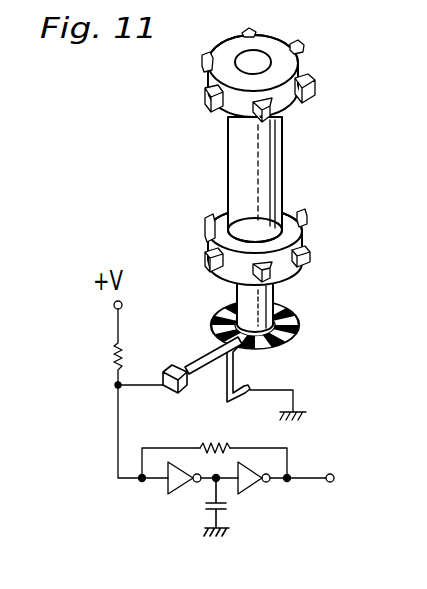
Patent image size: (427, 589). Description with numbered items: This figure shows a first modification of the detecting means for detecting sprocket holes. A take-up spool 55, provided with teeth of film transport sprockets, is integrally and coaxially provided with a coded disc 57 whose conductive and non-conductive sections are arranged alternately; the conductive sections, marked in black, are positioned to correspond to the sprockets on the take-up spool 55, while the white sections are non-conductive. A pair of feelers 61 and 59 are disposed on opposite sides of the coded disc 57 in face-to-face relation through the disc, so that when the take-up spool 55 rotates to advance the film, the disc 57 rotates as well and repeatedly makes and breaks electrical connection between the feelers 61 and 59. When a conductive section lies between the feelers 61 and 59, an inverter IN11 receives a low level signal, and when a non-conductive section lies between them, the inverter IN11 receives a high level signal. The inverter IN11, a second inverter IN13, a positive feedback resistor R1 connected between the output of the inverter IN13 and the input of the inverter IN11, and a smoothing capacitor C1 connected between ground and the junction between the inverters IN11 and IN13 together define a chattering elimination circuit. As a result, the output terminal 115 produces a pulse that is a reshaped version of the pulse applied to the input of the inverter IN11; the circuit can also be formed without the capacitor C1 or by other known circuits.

The take-up spool 55 is at (276, 153).
The coded disc 57 is at (292, 317).
The feeler 59 is at (235, 368).
The feeler 61 is at (203, 358).
The positive feedback resistor R1 is at (213, 447).
The smoothing capacitor C1 is at (229, 505).
The inverter IN11 is at (177, 490).
The inverter IN13 is at (248, 486).
The output terminal 115 is at (353, 472).